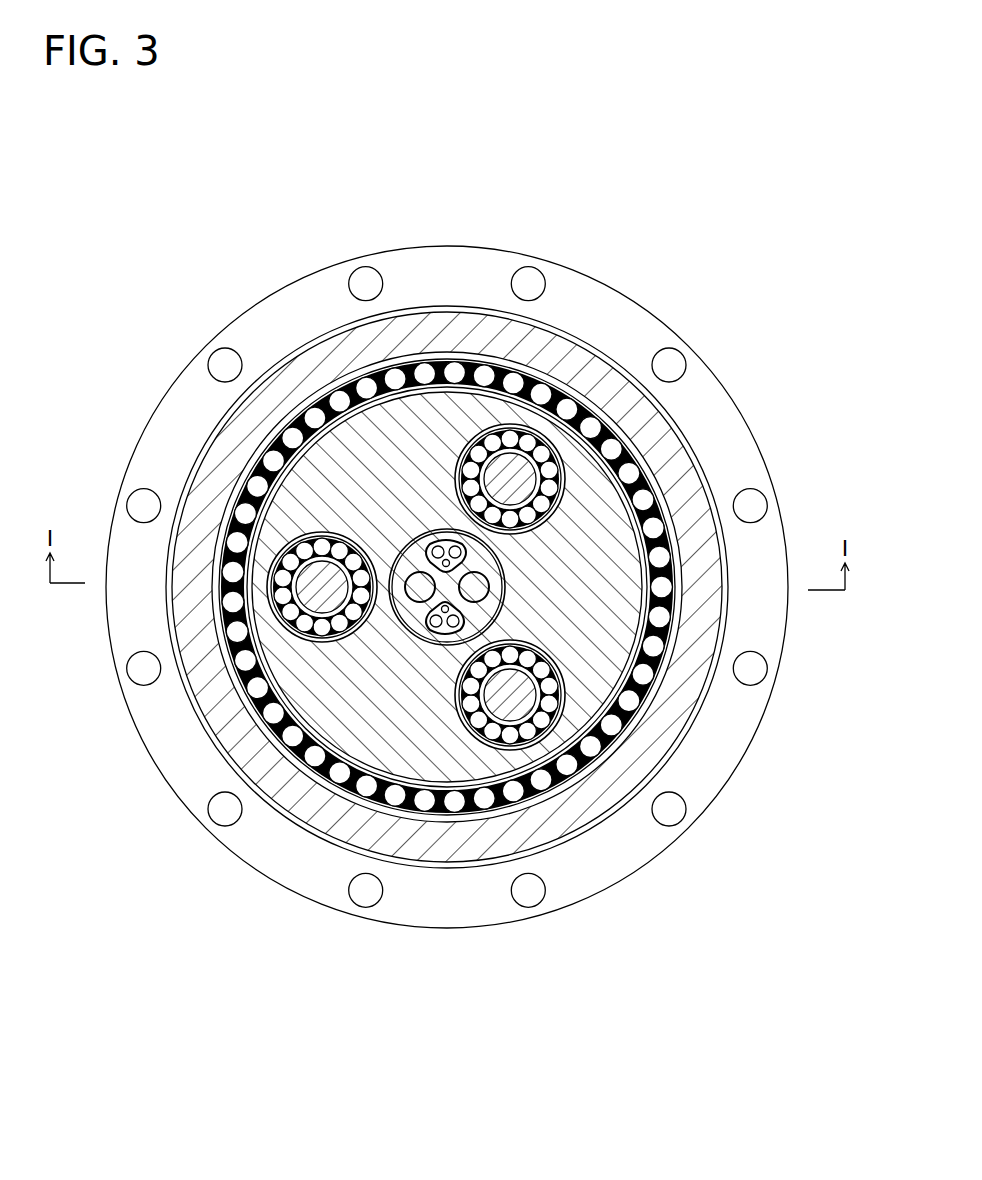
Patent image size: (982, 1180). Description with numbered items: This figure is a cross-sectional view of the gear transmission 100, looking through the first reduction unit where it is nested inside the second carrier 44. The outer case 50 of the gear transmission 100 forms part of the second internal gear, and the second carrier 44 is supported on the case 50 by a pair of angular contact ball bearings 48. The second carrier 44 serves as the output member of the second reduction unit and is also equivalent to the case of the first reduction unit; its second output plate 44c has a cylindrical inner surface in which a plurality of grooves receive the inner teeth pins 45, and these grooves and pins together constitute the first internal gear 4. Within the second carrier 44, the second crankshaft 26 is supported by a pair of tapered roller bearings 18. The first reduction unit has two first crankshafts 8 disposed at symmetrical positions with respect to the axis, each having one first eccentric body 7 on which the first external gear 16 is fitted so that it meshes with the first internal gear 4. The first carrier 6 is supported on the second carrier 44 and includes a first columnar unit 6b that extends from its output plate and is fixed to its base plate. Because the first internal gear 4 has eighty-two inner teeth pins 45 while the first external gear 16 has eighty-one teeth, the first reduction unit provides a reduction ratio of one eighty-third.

The gear transmission 100 is at (600, 158).
The case 50 is at (697, 458).
The angular contact ball bearings 48 is at (655, 417).
The second carrier 44 is at (553, 587).
The second output plate 44c is at (593, 590).
The second crankshaft 26 is at (284, 545).
The tapered roller bearings 18 is at (333, 547).
The first eccentric body 7 is at (286, 724).
The first crankshaft 8 is at (318, 566).
The inner teeth pins 45 is at (503, 600).
The first external gear 16 is at (397, 622).
The first internal gear 4 is at (407, 627).
The first carrier 6 is at (411, 777).
The first columnar unit 6b is at (452, 637).